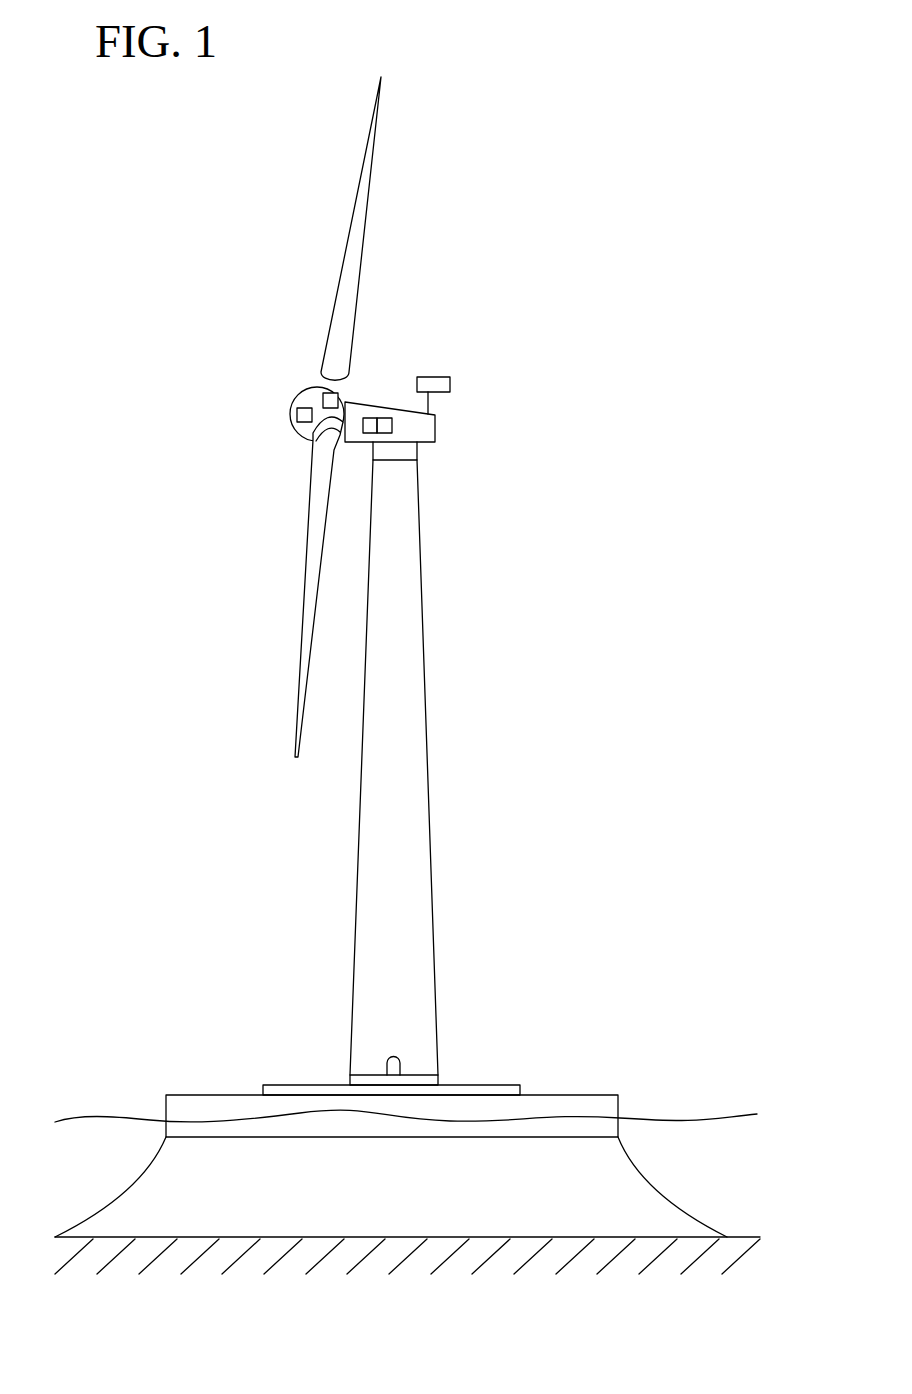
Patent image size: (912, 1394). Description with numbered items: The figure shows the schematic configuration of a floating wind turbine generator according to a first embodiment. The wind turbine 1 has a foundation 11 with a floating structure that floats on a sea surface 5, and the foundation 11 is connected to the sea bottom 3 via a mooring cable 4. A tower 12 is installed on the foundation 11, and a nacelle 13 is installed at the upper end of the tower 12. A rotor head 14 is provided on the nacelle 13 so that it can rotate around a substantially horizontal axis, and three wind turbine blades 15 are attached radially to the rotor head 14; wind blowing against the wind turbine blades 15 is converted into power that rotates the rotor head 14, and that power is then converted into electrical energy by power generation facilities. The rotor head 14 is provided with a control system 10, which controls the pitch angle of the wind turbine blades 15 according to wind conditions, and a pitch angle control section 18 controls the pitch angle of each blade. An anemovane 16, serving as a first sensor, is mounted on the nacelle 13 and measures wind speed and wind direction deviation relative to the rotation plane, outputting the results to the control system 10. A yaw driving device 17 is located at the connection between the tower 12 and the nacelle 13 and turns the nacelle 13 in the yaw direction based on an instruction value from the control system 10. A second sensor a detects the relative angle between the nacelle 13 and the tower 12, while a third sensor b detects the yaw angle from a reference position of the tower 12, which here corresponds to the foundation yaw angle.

The wind turbine 1 is at (543, 130).
The sea bottom 3 is at (473, 1237).
The mooring cable 4 is at (112, 1198).
The sea surface 5 is at (733, 1113).
The control system 10 is at (301, 437).
The foundation 11 is at (590, 1092).
The tower 12 is at (428, 777).
The nacelle 13 is at (428, 442).
The rotor head 14 is at (308, 400).
The wind turbine blades 15 is at (353, 223).
The anemovane 16 is at (450, 385).
The yaw driving device 17 is at (382, 448).
The pitch angle control section 18 is at (327, 397).
The second sensor a is at (371, 418).
The third sensor b is at (388, 418).